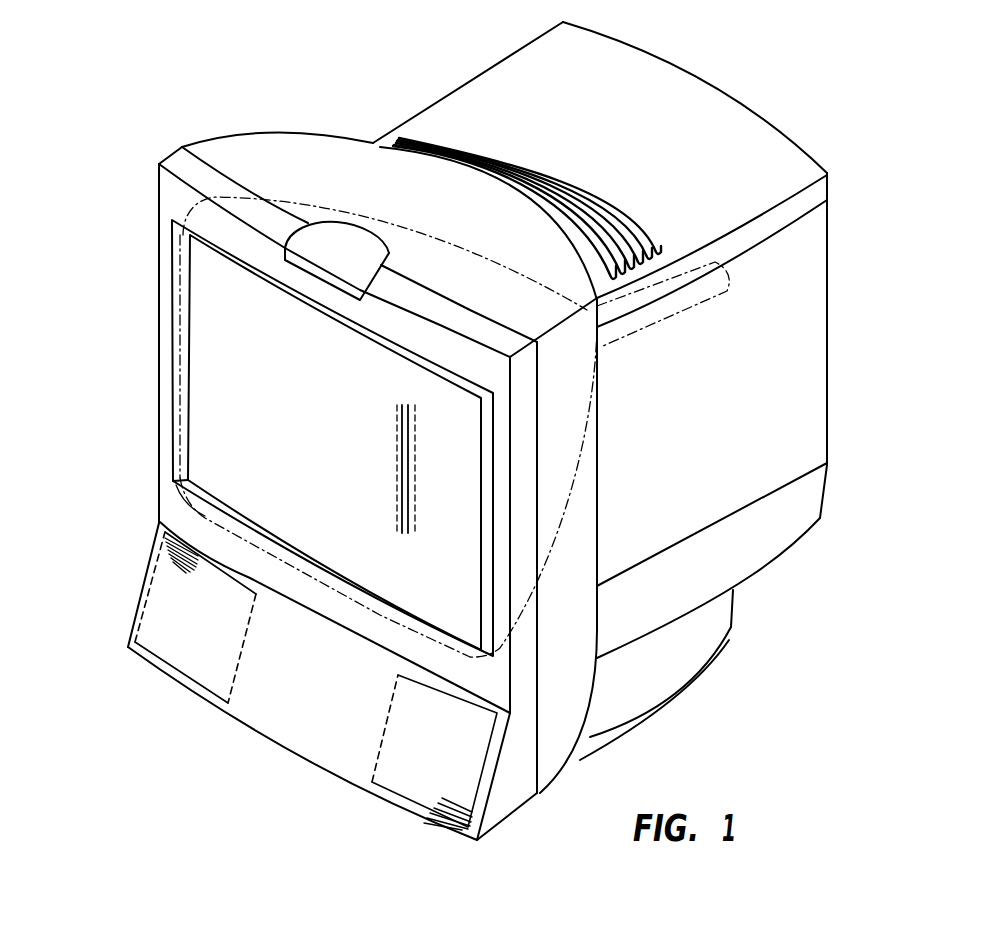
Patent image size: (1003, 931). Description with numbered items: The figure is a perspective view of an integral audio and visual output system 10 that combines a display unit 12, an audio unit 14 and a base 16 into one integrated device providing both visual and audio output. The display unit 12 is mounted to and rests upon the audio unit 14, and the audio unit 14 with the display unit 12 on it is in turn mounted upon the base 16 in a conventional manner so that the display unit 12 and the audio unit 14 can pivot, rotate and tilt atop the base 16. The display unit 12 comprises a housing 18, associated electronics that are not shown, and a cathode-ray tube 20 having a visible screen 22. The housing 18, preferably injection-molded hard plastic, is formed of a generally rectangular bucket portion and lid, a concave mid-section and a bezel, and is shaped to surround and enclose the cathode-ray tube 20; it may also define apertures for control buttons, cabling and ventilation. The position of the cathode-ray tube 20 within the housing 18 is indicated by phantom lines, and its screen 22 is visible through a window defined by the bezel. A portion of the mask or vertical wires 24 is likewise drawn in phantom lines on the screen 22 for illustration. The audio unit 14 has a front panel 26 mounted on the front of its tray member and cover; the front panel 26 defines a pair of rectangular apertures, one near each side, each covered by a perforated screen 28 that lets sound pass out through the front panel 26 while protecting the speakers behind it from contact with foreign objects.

The integral audio and visual output system 10 is at (320, 95).
The display unit 12 is at (913, 62).
The audio unit 14 is at (915, 437).
The base 16 is at (694, 656).
The housing 18 is at (828, 250).
The cathode-ray tube 20 is at (687, 313).
The screen 22 is at (272, 401).
The mask or vertical wires 24 is at (397, 477).
The front panel 26 is at (288, 745).
The perforated screen 28 is at (180, 668).